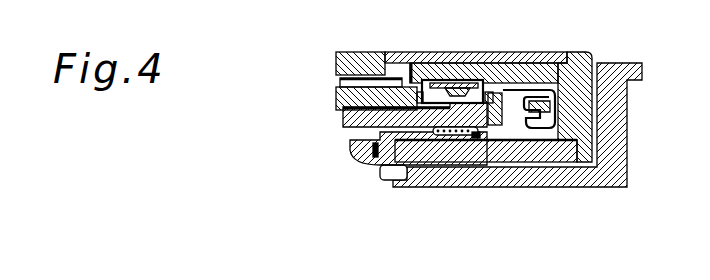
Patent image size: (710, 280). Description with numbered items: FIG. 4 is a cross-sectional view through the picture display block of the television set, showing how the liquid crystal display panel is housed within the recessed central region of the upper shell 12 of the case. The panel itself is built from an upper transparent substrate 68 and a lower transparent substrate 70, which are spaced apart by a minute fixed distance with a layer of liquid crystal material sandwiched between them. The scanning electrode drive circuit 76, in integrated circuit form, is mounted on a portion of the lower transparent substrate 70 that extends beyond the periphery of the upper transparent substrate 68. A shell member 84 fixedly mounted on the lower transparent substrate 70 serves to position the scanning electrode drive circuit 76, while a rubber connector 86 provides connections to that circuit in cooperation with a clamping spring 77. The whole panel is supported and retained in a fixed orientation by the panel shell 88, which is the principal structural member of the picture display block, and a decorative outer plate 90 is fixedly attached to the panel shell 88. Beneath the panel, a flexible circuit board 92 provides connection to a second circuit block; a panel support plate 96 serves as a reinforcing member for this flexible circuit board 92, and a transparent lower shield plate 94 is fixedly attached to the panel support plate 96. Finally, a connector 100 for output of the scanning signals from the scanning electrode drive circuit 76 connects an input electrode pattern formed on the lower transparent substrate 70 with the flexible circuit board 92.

The upper shell 12 is at (633, 63).
The upper transparent substrate 68 is at (352, 93).
The lower transparent substrate 70 is at (350, 118).
The scanning electrode drive circuit 76 is at (441, 98).
The clamping spring 77 is at (456, 90).
The shell member 84 is at (486, 95).
The rubber connector 86 is at (494, 58).
The panel shell 88 is at (578, 63).
The decorative outer plate 90 is at (537, 55).
The flexible circuit board 92 is at (520, 135).
The lower shield plate 94 is at (352, 142).
The panel support plate 96 is at (384, 180).
The connector for output of the scanning signals 100 is at (552, 113).